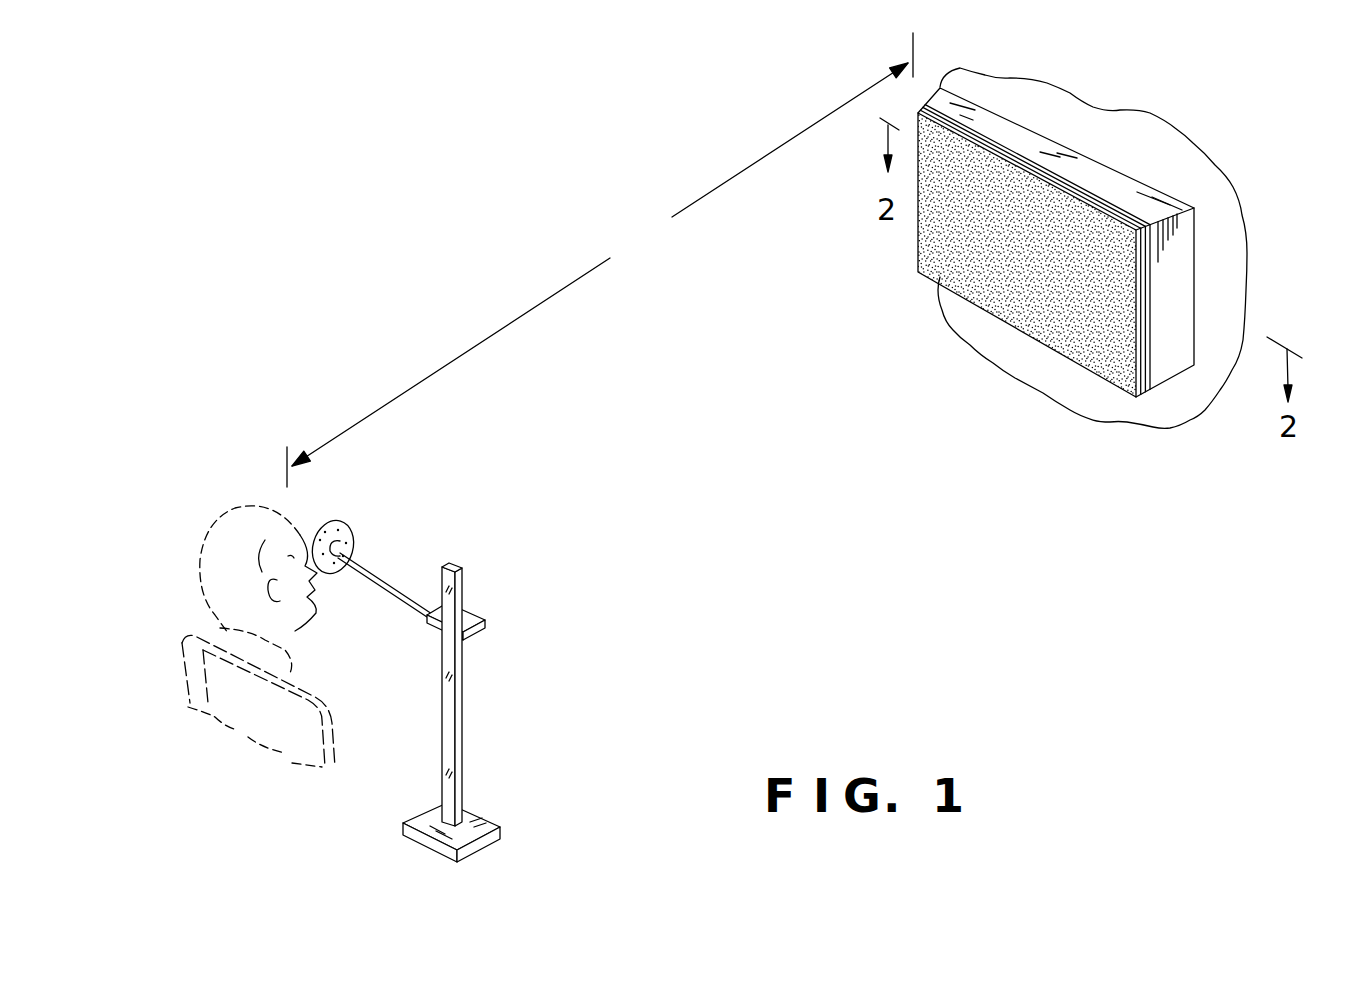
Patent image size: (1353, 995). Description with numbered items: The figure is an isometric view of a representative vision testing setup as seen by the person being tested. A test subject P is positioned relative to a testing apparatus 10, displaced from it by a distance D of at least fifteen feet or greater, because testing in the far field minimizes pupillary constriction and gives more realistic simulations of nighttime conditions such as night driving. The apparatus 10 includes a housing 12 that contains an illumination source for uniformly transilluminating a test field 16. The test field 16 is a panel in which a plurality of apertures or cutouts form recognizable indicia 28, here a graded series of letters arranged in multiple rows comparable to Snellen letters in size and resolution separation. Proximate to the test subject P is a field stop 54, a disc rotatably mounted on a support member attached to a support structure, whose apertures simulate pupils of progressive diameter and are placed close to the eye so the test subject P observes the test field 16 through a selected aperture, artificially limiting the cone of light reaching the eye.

The testing apparatus 10 is at (1188, 163).
The housing 12 is at (1168, 381).
The test field 16 is at (932, 242).
The indicia 28 is at (997, 168).
The field stop 54 is at (350, 527).
The test subject P is at (255, 507).
The distance D is at (600, 260).